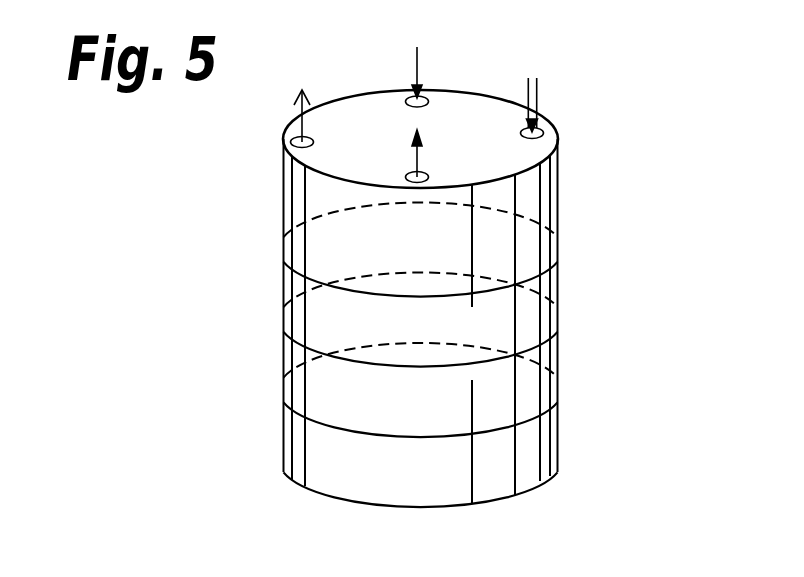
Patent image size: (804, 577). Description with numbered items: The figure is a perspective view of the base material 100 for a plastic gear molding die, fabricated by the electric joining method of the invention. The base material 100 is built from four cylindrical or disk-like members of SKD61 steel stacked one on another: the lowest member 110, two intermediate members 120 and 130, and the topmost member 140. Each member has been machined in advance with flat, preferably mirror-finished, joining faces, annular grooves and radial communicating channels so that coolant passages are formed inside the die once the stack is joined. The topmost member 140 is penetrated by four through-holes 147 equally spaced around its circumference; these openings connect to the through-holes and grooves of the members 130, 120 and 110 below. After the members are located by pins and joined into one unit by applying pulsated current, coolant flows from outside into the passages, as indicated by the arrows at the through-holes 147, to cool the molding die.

The base material for plastic molding die 100 is at (483, 257).
The lowest member 110 is at (543, 425).
The intermediate member 120 is at (543, 357).
The intermediate member 130 is at (543, 285).
The topmost member 140 is at (543, 185).
The through-holes 147 is at (414, 174).